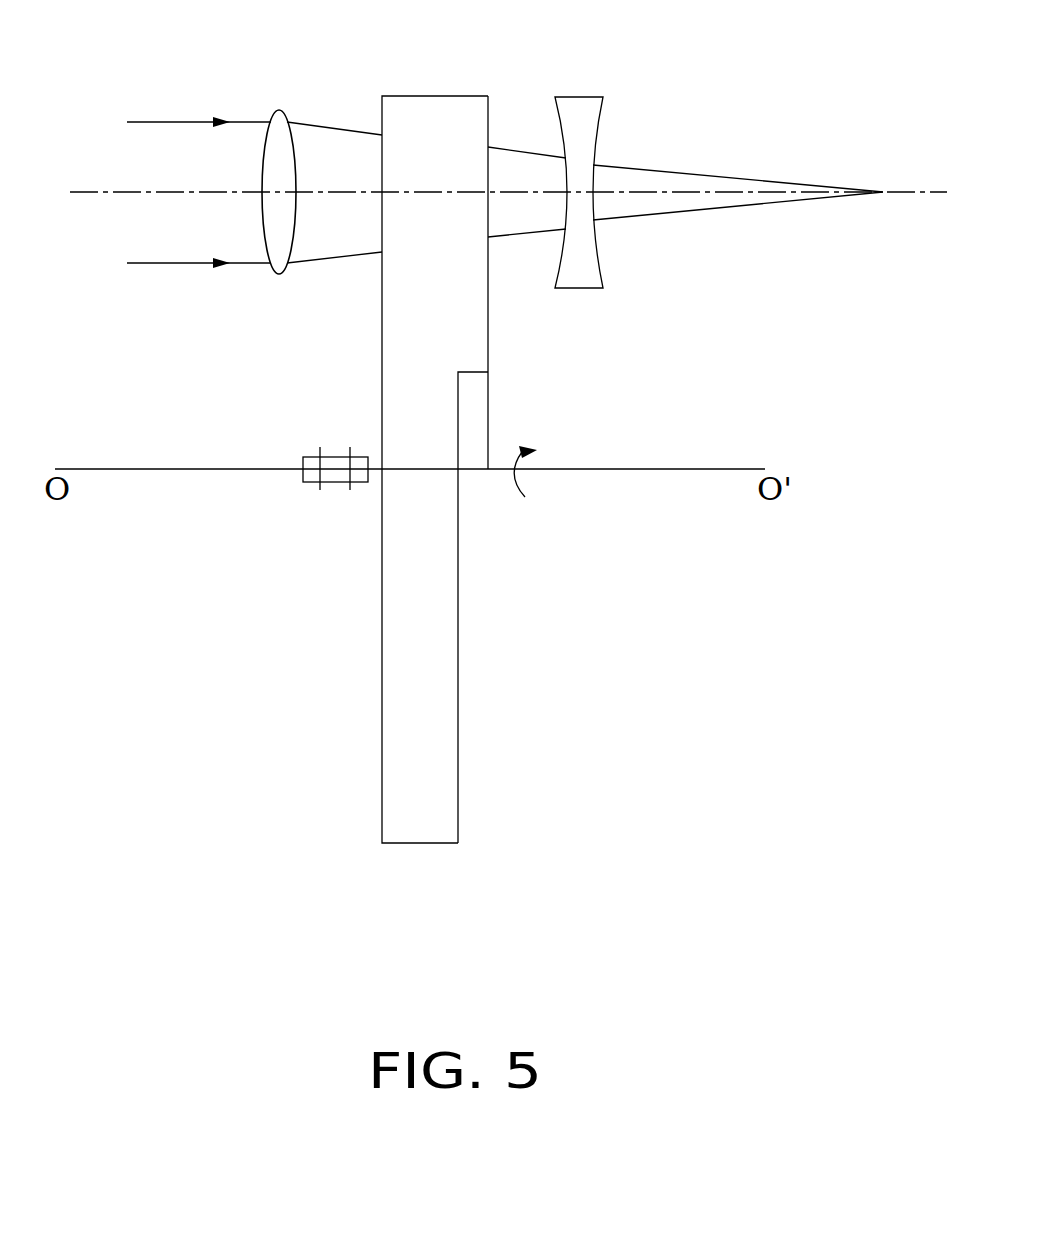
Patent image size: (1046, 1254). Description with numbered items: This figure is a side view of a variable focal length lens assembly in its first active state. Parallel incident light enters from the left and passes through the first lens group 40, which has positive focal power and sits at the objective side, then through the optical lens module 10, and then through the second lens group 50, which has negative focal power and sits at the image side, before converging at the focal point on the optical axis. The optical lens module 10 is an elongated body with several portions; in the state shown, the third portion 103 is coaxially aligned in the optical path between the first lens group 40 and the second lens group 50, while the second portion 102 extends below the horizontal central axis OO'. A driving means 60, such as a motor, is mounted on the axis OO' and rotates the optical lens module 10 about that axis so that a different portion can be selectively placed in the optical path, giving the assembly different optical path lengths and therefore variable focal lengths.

The optical lens module 10 is at (413, 83).
The first lens group 40 is at (278, 122).
The second lens group 50 is at (585, 105).
The driving means 60 is at (337, 482).
The second portion 102 is at (457, 721).
The third portion 103 is at (480, 108).